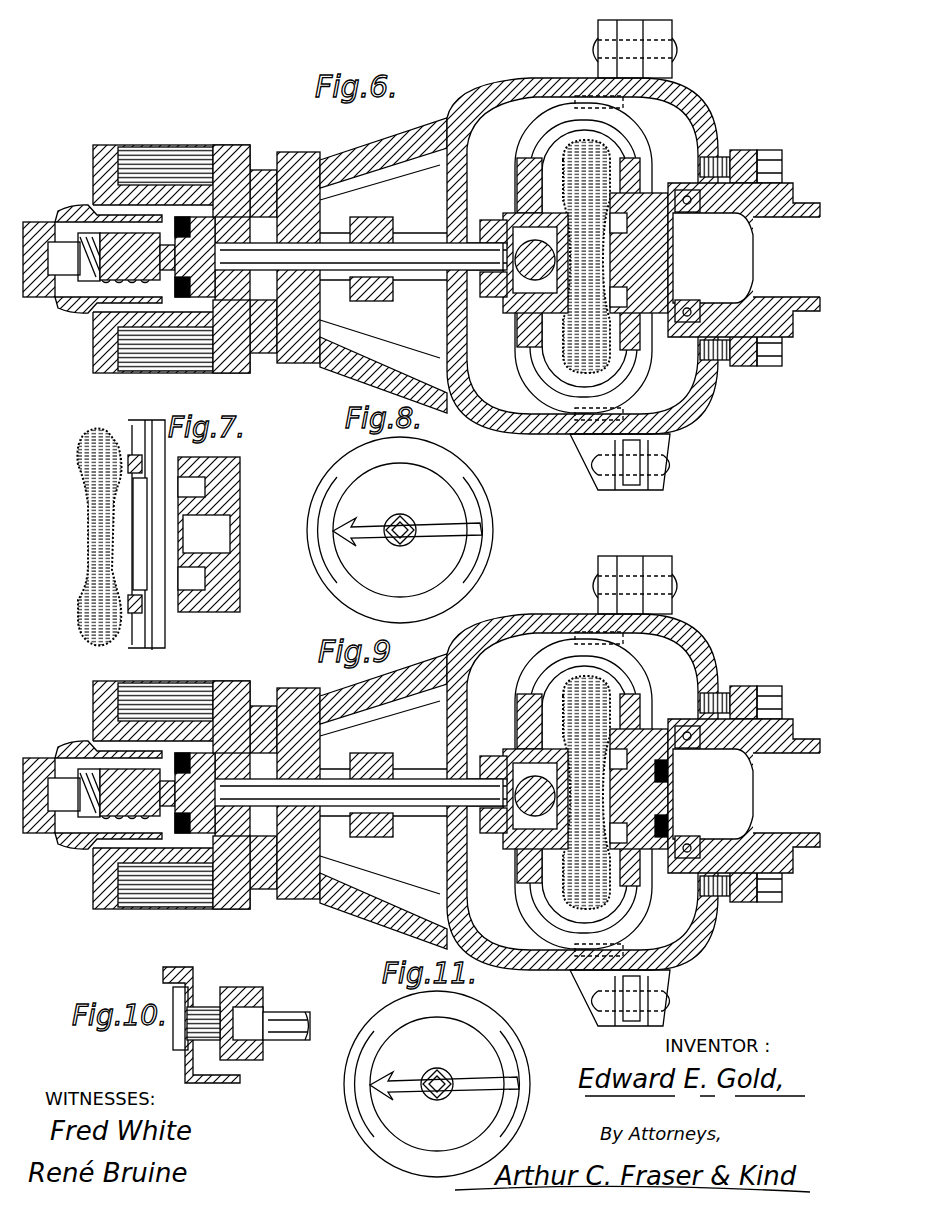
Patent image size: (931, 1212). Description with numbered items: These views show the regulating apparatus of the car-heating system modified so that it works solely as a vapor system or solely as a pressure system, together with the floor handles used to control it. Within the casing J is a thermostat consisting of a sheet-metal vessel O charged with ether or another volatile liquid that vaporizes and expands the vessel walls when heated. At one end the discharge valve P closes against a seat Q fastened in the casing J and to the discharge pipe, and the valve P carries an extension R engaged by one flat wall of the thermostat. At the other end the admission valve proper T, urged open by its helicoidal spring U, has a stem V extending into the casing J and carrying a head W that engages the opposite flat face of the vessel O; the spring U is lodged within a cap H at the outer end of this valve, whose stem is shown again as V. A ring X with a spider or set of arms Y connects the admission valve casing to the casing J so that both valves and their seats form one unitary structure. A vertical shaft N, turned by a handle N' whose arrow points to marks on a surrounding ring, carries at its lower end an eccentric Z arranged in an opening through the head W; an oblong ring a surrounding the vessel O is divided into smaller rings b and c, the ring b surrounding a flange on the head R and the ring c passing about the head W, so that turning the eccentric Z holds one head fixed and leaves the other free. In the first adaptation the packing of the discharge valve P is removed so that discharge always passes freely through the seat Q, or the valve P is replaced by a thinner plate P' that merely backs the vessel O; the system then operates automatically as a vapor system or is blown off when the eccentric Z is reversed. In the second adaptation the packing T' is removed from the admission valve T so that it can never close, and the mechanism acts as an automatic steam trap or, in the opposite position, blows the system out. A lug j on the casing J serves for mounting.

In FIG. 6, the cap H is at (88, 308).
In FIG. 9, the cap H is at (98, 737).
In FIG. 10, the cap H is at (165, 970).
In FIG. 6, the helicoidal spring U is at (117, 230).
In FIG. 9, the helicoidal spring U is at (120, 817).
In FIG. 6, the admission valve proper T is at (234, 246).
In FIG. 9, the admission valve proper T is at (217, 795).
In FIG. 6, the packing of the admission valve T' is at (157, 208).
In FIG. 9, the packing of the admission valve T' is at (157, 793).
In FIG. 6, the ring X is at (300, 362).
In FIG. 9, the ring X is at (285, 793).
In FIG. 6, the spider or set of arms Y is at (390, 362).
In FIG. 9, the spider or set of arms Y is at (383, 801).
In FIG. 10, the stem of the admission valve V is at (286, 1009).
In FIG. 6, the valve stem V' is at (358, 263).
In FIG. 9, the valve stem V' is at (358, 801).
In FIG. 6, the eccentric Z is at (460, 238).
In FIG. 9, the eccentric Z is at (487, 794).
In FIG. 6, the casing J is at (493, 105).
In FIG. 9, the casing J is at (614, 763).
In FIG. 6, the oblong ring a is at (627, 143).
In FIG. 9, the smaller ring b is at (644, 720).
In FIG. 9, the smaller ring c is at (540, 738).
In FIG. 6, the vertical shaft N is at (523, 254).
In FIG. 8, the vertical shaft N is at (400, 530).
In FIG. 11, the vertical shaft N is at (436, 1084).
In FIG. 8, the handle N' is at (430, 561).
In FIG. 6, the head W is at (530, 295).
In FIG. 9, the head W is at (522, 765).
In FIG. 6, the vessel O is at (570, 358).
In FIG. 9, the vessel O is at (567, 903).
In FIG. 7, the vessel O is at (87, 607).
In FIG. 6, the extension R is at (607, 335).
In FIG. 9, the extension R is at (626, 887).
In FIG. 6, the discharge valve P is at (669, 253).
In FIG. 9, the discharge valve P is at (654, 789).
In FIG. 7, the plate P' is at (105, 535).
In FIG. 6, the seat Q is at (702, 250).
In FIG. 9, the seat Q is at (695, 784).
In FIG. 7, the seat Q is at (193, 513).
In FIG. 6, the lug j is at (655, 490).
In FIG. 9, the lug j is at (620, 998).